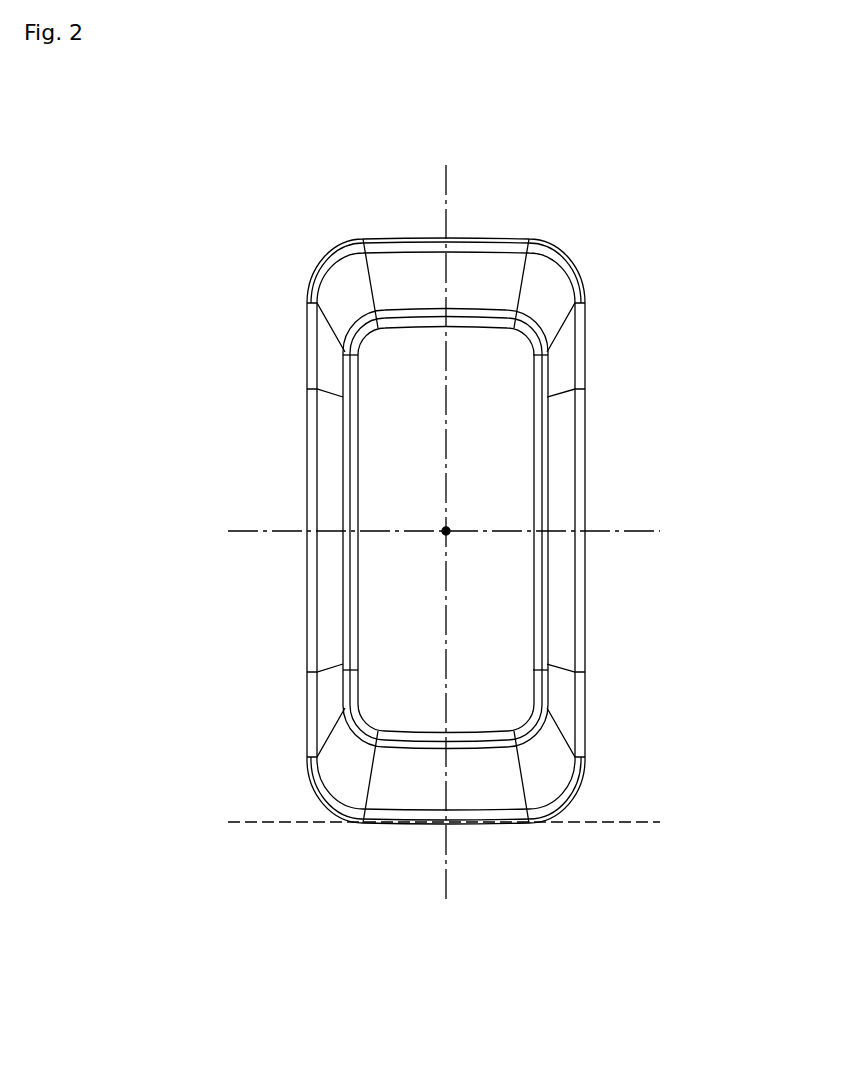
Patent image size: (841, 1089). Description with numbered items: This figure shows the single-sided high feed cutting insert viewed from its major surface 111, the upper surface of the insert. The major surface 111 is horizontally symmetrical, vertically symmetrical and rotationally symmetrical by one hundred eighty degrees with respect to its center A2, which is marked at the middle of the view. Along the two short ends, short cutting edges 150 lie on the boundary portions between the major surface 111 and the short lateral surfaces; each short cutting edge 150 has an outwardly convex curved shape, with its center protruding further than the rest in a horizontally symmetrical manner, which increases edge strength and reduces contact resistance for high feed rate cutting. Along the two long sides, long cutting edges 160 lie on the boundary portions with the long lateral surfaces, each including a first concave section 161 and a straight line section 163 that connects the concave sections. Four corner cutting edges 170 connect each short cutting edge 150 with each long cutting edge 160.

The major surface 111 is at (500, 397).
The short cutting edge 150 is at (520, 239).
The long cutting edge 160 is at (307, 589).
The first concave section 161 is at (307, 345).
The straight line section 163 is at (307, 457).
The corner cutting edge 170 is at (334, 248).
The center A2 is at (449, 527).